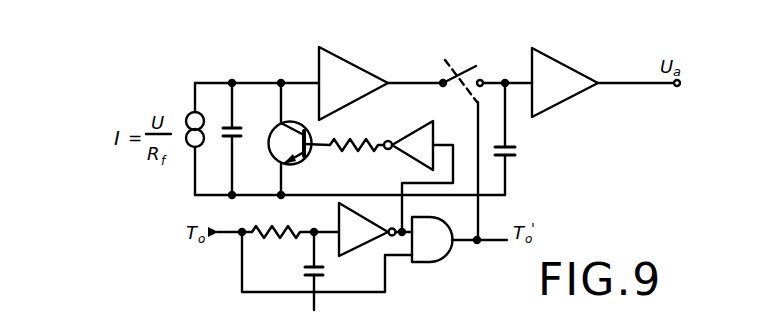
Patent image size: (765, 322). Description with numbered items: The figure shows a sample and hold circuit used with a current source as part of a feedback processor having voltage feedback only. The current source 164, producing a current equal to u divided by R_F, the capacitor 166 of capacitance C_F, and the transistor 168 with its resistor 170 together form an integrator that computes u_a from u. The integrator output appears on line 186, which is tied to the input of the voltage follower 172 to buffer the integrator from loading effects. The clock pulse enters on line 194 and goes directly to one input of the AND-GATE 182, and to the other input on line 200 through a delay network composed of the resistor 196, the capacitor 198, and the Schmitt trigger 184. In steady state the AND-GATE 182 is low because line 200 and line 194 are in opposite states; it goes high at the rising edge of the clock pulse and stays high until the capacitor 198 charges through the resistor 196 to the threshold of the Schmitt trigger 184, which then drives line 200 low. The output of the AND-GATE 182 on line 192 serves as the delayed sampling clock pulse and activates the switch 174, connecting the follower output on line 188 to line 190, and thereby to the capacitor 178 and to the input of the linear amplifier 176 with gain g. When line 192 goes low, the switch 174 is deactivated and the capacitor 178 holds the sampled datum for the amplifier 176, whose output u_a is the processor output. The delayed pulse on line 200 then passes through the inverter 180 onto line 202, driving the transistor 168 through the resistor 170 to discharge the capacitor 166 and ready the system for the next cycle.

The current source 164 is at (188, 113).
The capacitor 166 is at (240, 131).
The transistor 168 is at (303, 164).
The resistor 170 is at (348, 145).
The voltage follower 172 is at (357, 65).
The switch 174 is at (485, 63).
The linear amplifier 176 is at (562, 64).
The capacitor 178 is at (518, 152).
The inverter 180 is at (412, 158).
The AND-GATE 182 is at (438, 262).
The Schmitt trigger 184 is at (348, 252).
The line 186 is at (251, 82).
The line 188 is at (414, 81).
The line 190 is at (512, 76).
The line 192 is at (473, 244).
The line 194 is at (226, 237).
The resistor 196 is at (258, 239).
The capacitor 198 is at (304, 272).
The line 200 is at (391, 228).
The line 202 is at (389, 141).